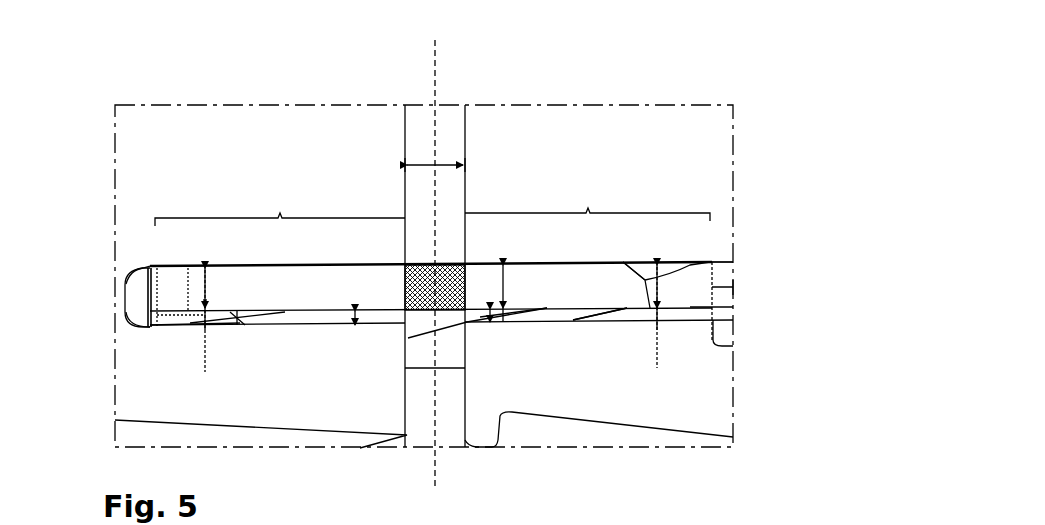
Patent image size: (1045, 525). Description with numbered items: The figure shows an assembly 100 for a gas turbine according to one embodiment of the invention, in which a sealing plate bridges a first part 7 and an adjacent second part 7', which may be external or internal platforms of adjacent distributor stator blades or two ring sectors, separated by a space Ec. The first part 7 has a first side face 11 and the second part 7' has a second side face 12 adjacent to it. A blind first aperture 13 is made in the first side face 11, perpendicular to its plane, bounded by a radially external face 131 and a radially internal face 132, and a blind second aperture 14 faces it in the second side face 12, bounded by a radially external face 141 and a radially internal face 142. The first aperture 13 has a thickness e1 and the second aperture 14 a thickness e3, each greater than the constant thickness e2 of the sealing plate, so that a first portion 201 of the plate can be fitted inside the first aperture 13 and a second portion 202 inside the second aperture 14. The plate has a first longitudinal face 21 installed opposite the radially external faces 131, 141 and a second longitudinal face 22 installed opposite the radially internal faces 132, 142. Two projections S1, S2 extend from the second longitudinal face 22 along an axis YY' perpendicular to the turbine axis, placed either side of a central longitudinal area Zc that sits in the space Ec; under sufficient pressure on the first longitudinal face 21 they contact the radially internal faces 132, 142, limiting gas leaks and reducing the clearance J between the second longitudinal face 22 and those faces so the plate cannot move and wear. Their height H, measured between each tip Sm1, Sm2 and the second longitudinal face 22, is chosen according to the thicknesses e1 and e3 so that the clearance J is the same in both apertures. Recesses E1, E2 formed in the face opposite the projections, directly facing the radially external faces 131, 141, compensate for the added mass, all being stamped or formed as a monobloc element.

The assembly 100 is at (84, 88).
The first side face 11 is at (465, 132).
The second side face 12 is at (405, 138).
The first aperture 13 is at (733, 318).
The radially external face 131 is at (712, 262).
The radially internal face 132 is at (735, 346).
The second aperture 14 is at (118, 324).
The radially external face 141 is at (143, 268).
The radially internal face 142 is at (150, 327).
The first longitudinal face 21 is at (282, 265).
The second longitudinal face 22 is at (566, 330).
The first portion 201 is at (587, 201).
The second portion 202 is at (280, 208).
The first part 7 is at (599, 239).
The second part 7' is at (260, 231).
The central longitudinal area Zc is at (420, 265).
The space Ec is at (435, 154).
The axis YY' is at (430, 252).
The recess E1 is at (205, 300).
The recess E2 is at (658, 322).
The projection S1 is at (190, 327).
The projection S2 is at (610, 322).
The tip Sm1 is at (202, 346).
The tip Sm2 is at (649, 344).
The height H is at (238, 325).
The clearance J is at (341, 318).
The thickness e1 is at (733, 290).
The thickness e2 is at (396, 295).
The thickness e3 is at (133, 299).